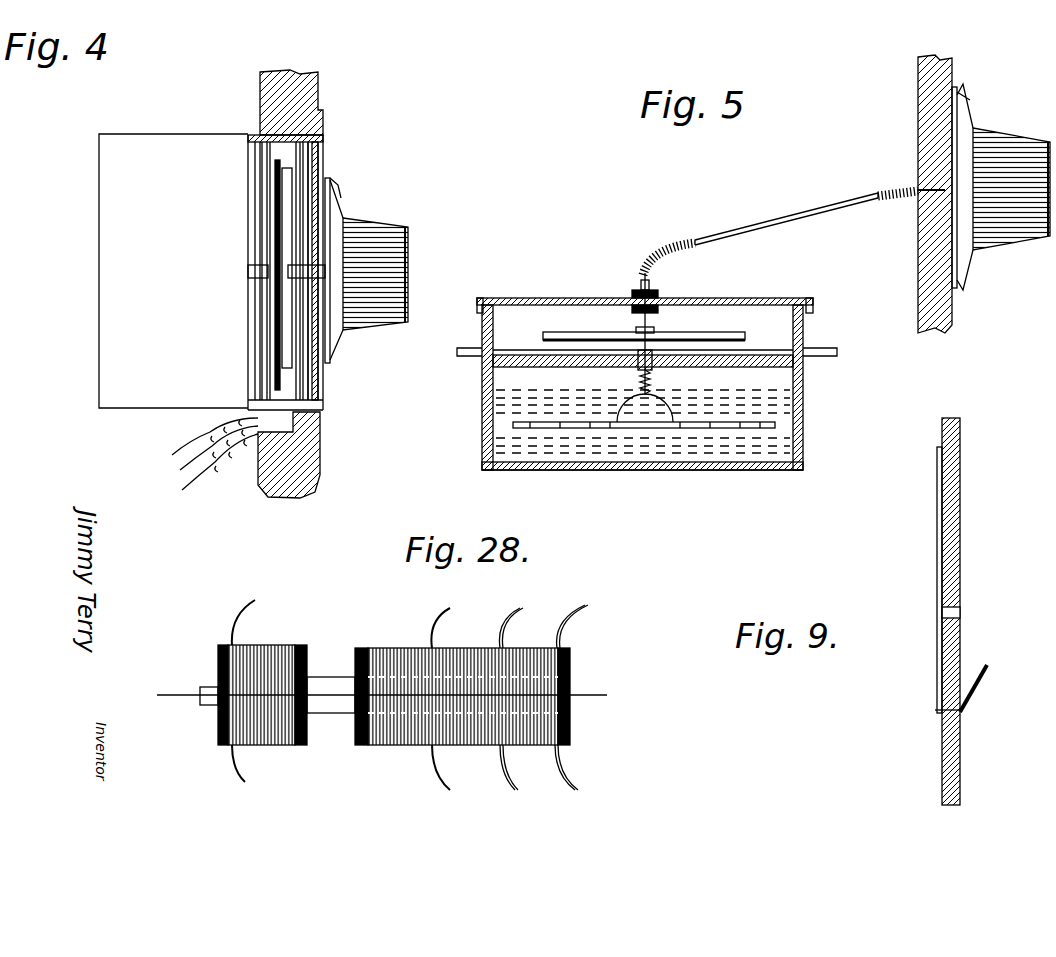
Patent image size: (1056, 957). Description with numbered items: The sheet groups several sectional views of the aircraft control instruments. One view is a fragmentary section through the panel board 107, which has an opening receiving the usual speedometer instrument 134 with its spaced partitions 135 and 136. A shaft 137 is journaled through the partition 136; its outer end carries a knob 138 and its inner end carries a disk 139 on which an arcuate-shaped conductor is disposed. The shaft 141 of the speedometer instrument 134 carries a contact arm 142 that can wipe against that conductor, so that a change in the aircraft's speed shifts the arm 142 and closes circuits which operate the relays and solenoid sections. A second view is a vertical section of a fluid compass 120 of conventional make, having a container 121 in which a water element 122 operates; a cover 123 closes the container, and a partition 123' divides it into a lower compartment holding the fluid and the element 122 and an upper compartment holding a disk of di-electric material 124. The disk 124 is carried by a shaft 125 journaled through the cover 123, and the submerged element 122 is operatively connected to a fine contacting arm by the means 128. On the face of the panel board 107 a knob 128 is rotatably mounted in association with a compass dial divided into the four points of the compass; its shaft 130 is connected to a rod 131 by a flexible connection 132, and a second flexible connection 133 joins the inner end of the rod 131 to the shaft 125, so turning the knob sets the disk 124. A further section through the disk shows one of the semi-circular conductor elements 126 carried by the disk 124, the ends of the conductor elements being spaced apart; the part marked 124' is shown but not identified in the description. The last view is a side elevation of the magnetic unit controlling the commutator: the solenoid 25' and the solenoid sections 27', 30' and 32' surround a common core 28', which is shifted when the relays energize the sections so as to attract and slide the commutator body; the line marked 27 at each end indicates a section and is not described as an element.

In FIG. 4, the panel board 107 is at (318, 462).
In FIG. 5, the panel board 107 is at (914, 195).
In FIG. 4, the speedometer instrument 134 is at (163, 395).
In FIG. 4, the partition 135 is at (258, 165).
In FIG. 4, the partition 136 is at (312, 163).
In FIG. 4, the shaft 137 is at (310, 270).
In FIG. 4, the knob 138 is at (382, 236).
In FIG. 4, the disk 139 is at (286, 210).
In FIG. 4, the shaft 141 is at (256, 270).
In FIG. 4, the contact arm 142 is at (275, 197).
In FIG. 5, the fluid compass 120 is at (532, 286).
In FIG. 5, the container 121 is at (698, 470).
In FIG. 5, the water element 122 is at (740, 428).
In FIG. 5, the cover 123 is at (645, 282).
In FIG. 5, the partition 123' is at (649, 318).
In FIG. 5, the disk of di-electric material 124 is at (644, 306).
In FIG. 9, the bar 124' is at (982, 611).
In FIG. 5, the shaft 125 is at (657, 313).
In FIG. 9, the conductor element 126 is at (940, 558).
In FIG. 5, the knob 128 is at (640, 378).
In FIG. 5, the shaft 130 is at (918, 186).
In FIG. 5, the rod 131 is at (776, 218).
In FIG. 5, the flexible connection 132 is at (895, 205).
In FIG. 5, the flexible connection 133 is at (678, 232).
In FIG. 28, the shaft 27 is at (390, 695).
In FIG. 28, the solenoid 25' is at (262, 672).
In FIG. 28, the solenoid section 27' is at (462, 673).
In FIG. 28, the common core 28' is at (210, 691).
In FIG. 28, the solenoid section 30' is at (477, 689).
In FIG. 28, the solenoid section 32' is at (554, 689).